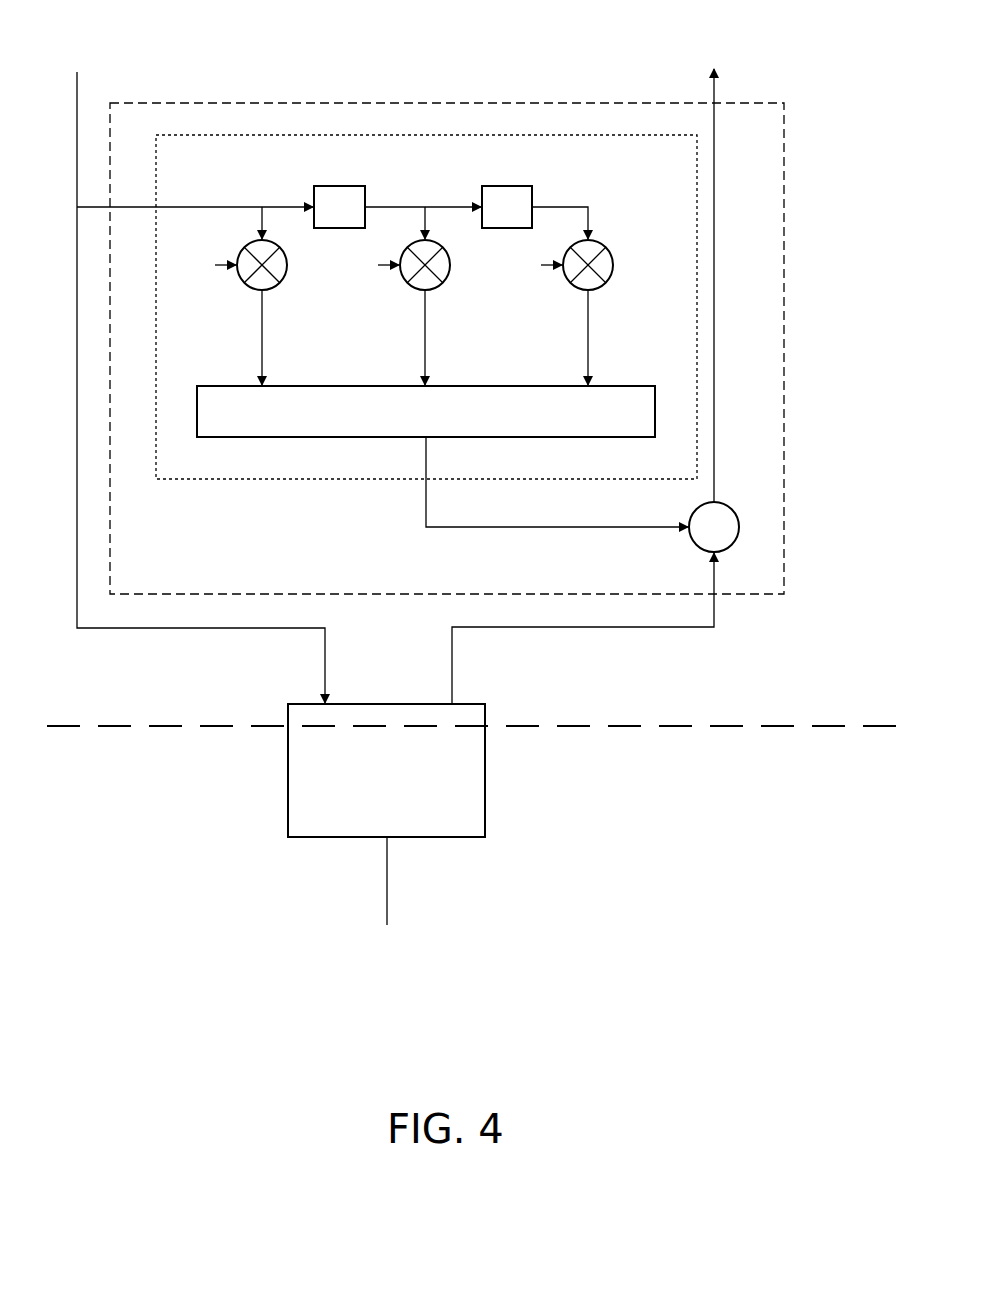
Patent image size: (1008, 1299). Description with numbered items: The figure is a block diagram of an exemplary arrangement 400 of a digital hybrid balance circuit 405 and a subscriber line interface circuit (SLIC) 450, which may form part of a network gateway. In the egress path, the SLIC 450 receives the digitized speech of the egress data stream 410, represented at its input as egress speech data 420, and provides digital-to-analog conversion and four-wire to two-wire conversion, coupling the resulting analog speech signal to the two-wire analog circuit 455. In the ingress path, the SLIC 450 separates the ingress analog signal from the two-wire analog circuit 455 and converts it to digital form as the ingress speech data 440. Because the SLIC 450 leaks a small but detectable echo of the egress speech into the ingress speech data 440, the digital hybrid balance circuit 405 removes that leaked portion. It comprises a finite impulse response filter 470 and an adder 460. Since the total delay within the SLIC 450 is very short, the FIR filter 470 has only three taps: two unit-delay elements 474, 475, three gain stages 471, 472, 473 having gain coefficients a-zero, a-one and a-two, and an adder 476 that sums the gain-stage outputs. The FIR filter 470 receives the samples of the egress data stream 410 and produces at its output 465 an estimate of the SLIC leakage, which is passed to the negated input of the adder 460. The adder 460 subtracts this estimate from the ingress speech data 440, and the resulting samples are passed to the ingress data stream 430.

The echo cancellation system 400 is at (473, 766).
The digital hybrid balance circuit 405 is at (785, 190).
The egress data stream 410 is at (180, 357).
The egress speech data 420 is at (323, 645).
The ingress data stream 430 is at (712, 254).
The ingress speech data 440 is at (453, 644).
The subscriber line interface circuit (SLIC) 450 is at (386, 770).
The two-wire analog circuit 455 is at (391, 918).
The adder 460 is at (726, 505).
The output of the FIR filter 465 is at (517, 534).
The finite impulse response (FIR) filter 470 is at (292, 134).
The first gain stage 471 is at (238, 291).
The second gain stage 472 is at (401, 291).
The third gain stage 473 is at (563, 291).
The first unit-delay element 474 is at (311, 183).
The second unit-delay element 475 is at (474, 183).
The adder of the FIR filter 476 is at (308, 444).